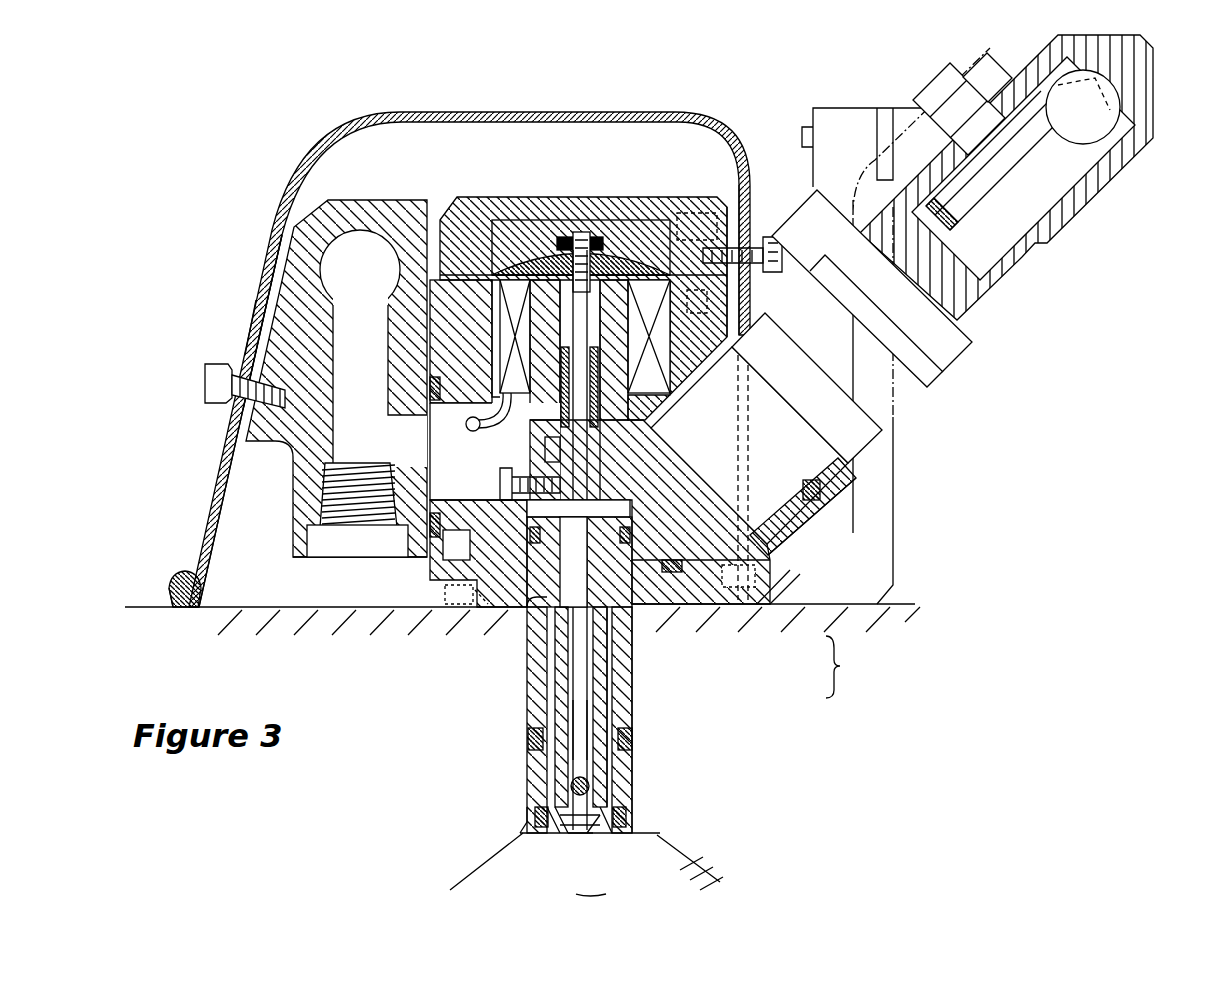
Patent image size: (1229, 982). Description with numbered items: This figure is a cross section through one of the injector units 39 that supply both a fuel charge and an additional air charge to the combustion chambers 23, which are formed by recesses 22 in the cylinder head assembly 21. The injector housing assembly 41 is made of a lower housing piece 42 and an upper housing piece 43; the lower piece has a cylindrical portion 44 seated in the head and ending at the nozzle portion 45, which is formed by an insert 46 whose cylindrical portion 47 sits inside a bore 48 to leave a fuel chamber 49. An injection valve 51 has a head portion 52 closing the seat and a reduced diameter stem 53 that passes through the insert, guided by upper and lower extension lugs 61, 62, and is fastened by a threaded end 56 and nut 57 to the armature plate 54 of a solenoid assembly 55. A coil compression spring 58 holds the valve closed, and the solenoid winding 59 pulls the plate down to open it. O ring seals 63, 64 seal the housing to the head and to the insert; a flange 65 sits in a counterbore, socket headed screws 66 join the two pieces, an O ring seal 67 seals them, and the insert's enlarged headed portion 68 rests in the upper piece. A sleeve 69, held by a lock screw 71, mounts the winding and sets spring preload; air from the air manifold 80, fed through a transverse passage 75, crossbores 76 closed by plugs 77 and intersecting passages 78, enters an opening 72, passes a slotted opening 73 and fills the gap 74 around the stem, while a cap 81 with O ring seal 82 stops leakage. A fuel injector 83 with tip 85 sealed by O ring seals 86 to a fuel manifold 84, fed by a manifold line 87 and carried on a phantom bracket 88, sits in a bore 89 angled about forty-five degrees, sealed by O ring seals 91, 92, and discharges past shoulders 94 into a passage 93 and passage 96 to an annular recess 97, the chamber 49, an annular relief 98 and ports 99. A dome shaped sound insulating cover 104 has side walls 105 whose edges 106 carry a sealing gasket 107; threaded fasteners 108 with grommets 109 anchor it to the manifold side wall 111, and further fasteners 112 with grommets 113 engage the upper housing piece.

The cylinder head assembly 21 is at (910, 598).
The recesses 22 is at (705, 862).
The combustion chambers 23 is at (588, 864).
The injector units 39 is at (433, 102).
The housing assembly 41 is at (854, 667).
The lower housing piece 42 is at (640, 678).
The upper housing piece 43 is at (765, 602).
The cylindrical portion 44 is at (606, 770).
The nozzle portion 45 is at (553, 840).
The insert 46 is at (637, 677).
The cylindrical portion 47 is at (630, 812).
The bore 48 is at (558, 672).
The chamber 49 is at (626, 728).
The injection valve 51 is at (580, 714).
The head portion 52 is at (580, 836).
The reduced diameter portion 53 is at (530, 731).
The armature plate 54 is at (479, 224).
The solenoid assembly 55 is at (633, 243).
The threaded end 56 is at (584, 233).
The nut 57 is at (570, 238).
The coil compression spring 58 is at (560, 318).
The solenoid winding 59 is at (558, 368).
The upper extension lug 61 is at (532, 546).
The lower extension lug 62 is at (553, 785).
The O ring seal 63 is at (560, 767).
The O ring seal 64 is at (520, 832).
The flange 65 is at (693, 600).
The socket headed screws 66 is at (488, 604).
The O ring seal 67 is at (438, 595).
The enlarged headed portion 68 is at (747, 507).
The sleeve 69 is at (478, 415).
The lock screw 71 is at (500, 482).
The opening 72 is at (462, 430).
The slotted opening 73 is at (548, 440).
The gap 74 is at (605, 768).
The passage 75 is at (353, 240).
The crossbores 76 is at (262, 352).
The plugs 77 is at (310, 503).
The intersecting passages 78 is at (398, 530).
The air manifold 80 is at (290, 212).
The cap 81 is at (672, 185).
The O ring seal 82 is at (690, 293).
The fuel injector 83 is at (955, 370).
The fuel manifold 84 is at (1078, 232).
The tips 85 is at (1097, 150).
The O ring seals 86 is at (1085, 208).
The manifold line 87 is at (1125, 122).
The mounting bracket 88 is at (907, 450).
The bore 89 is at (834, 524).
The O ring seal 91 is at (812, 566).
The O ring seal 92 is at (880, 502).
The passage 93 is at (708, 486).
The shoulders 94 is at (774, 560).
The passage 96 is at (650, 602).
The annular recess 97 is at (542, 602).
The annular relief 98 is at (614, 828).
The ports 99 is at (590, 836).
The sound insulating cover assembly 104 is at (333, 130).
The side walls 105 is at (238, 447).
The edges 106 is at (200, 588).
The sealing gasket 107 is at (170, 580).
The threaded fasteners 108 is at (205, 380).
The elastomeric grommets 109 is at (228, 408).
The side wall 111 is at (262, 310).
The fasteners 112 is at (770, 265).
The elastomeric grommets 113 is at (750, 342).